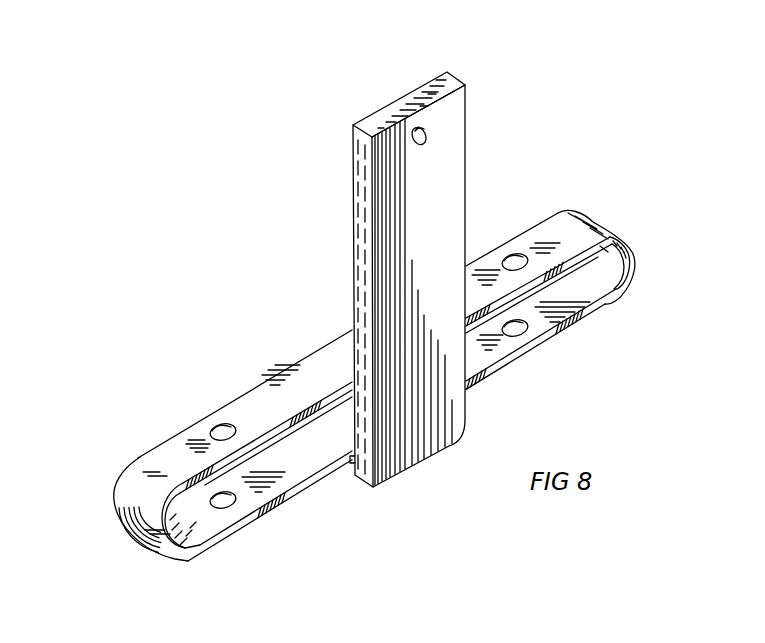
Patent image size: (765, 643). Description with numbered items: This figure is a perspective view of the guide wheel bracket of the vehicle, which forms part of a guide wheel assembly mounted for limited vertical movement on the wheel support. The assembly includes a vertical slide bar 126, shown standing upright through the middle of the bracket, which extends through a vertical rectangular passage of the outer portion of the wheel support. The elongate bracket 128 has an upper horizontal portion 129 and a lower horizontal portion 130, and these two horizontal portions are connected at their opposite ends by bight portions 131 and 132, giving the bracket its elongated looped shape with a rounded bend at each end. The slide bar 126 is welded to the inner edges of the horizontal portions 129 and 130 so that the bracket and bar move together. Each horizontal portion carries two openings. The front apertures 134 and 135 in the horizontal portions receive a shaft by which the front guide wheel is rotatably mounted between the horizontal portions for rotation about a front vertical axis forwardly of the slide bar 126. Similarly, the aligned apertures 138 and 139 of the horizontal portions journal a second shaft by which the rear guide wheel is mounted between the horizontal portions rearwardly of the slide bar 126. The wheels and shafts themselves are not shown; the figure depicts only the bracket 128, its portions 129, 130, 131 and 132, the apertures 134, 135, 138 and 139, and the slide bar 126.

The vertical slide bar 126 is at (465, 130).
The elongate bracket 128 is at (373, 368).
The upper horizontal portion 129 is at (375, 340).
The lower horizontal portion 130 is at (402, 411).
The bight portion 131 is at (114, 496).
The bight portion 132 is at (619, 277).
The front aperture 134 is at (222, 423).
The front aperture 135 is at (226, 509).
The aligned aperture 138 is at (513, 254).
The aligned aperture 139 is at (521, 335).